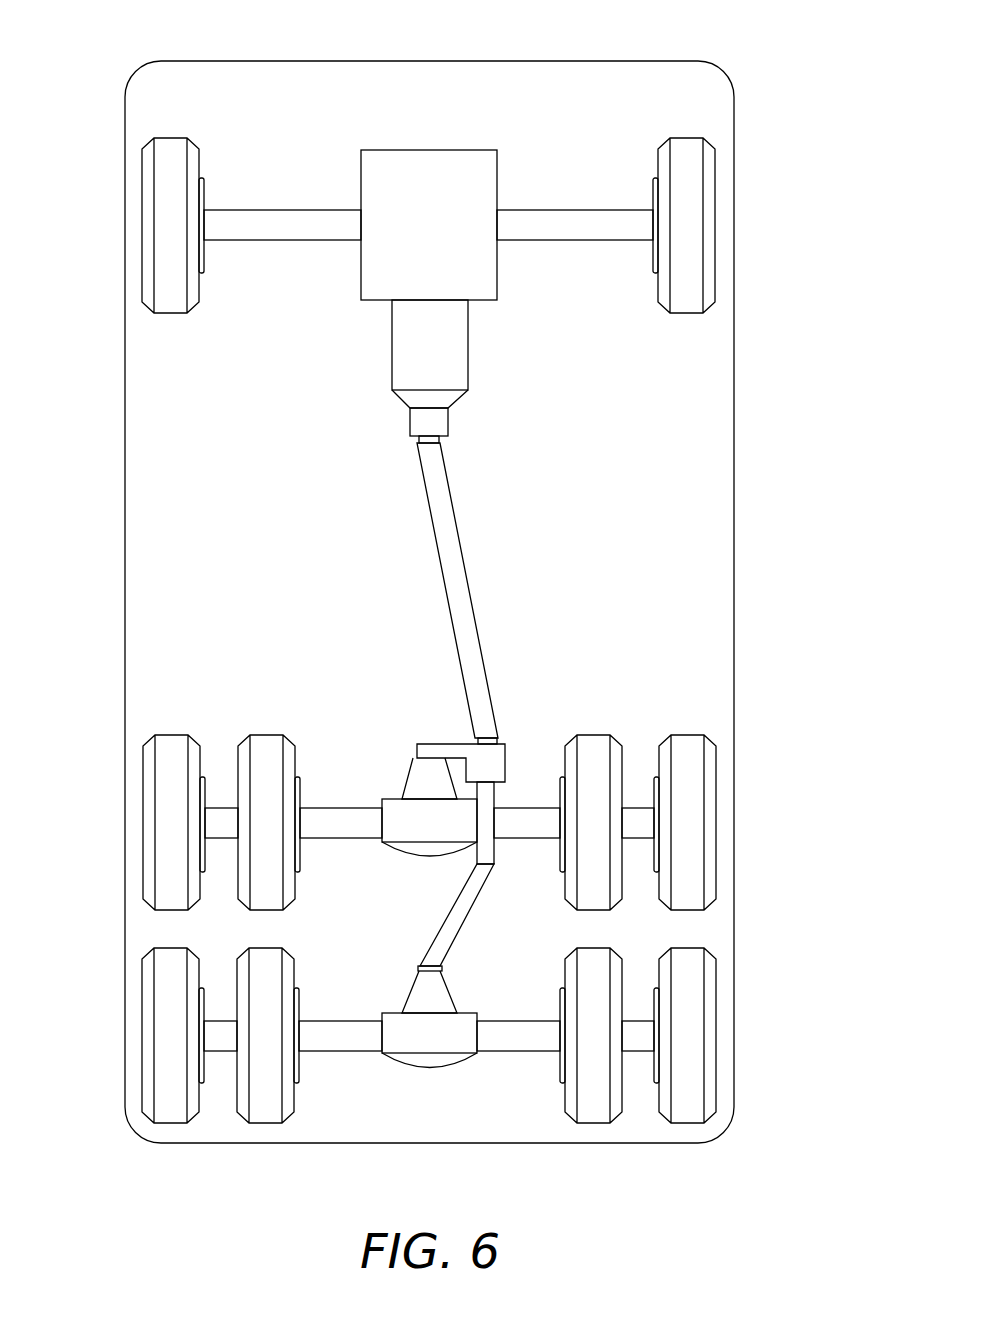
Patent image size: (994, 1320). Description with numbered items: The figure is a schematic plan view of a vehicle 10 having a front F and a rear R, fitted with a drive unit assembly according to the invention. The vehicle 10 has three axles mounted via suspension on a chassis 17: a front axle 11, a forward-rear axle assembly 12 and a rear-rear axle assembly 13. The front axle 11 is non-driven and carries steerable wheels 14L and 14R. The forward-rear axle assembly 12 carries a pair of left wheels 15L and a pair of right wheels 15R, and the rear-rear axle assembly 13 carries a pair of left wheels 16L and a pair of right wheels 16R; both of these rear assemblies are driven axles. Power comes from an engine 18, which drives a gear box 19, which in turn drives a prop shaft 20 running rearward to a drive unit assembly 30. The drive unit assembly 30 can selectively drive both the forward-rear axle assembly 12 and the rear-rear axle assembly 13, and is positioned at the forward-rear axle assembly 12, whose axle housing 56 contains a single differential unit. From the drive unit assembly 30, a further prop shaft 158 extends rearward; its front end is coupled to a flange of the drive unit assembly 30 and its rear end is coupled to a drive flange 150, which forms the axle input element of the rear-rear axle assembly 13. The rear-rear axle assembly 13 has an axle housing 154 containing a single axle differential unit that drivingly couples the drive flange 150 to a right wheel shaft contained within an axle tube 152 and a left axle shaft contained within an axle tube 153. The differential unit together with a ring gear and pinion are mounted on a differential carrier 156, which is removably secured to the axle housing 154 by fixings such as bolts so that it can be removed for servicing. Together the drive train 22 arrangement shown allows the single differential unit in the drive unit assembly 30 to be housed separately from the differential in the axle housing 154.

The vehicle 10 is at (727, 66).
The front axle 11 is at (575, 215).
The forward-rear axle assembly 12 is at (526, 835).
The rear-rear axle assembly 13 is at (344, 1028).
The left front wheel 14L is at (163, 178).
The right front wheel 14R is at (695, 178).
The pair of left wheels of forward-rear axle assembly 15L is at (114, 771).
The pair of right wheels of forward-rear axle assembly 15R is at (747, 771).
The pair of left wheels of rear-rear axle assembly 16L is at (114, 982).
The pair of right wheels of rear-rear axle assembly 16R is at (747, 982).
The chassis 17 is at (737, 553).
The engine 18 is at (417, 239).
The gear box 19 is at (417, 357).
The prop shaft 20 is at (462, 587).
The tandem axle drive system 22 is at (319, 726).
The drive unit assembly 30 is at (500, 752).
The axle housing 56 is at (358, 805).
The drive flange 150 is at (418, 966).
The axle tube 152 is at (517, 1052).
The axle tube 153 is at (345, 1053).
The axle housing 154 is at (430, 1063).
The differential carrier 156 is at (442, 992).
The prop shaft 158 is at (465, 905).
The front F is at (428, 60).
The rear R is at (430, 1145).